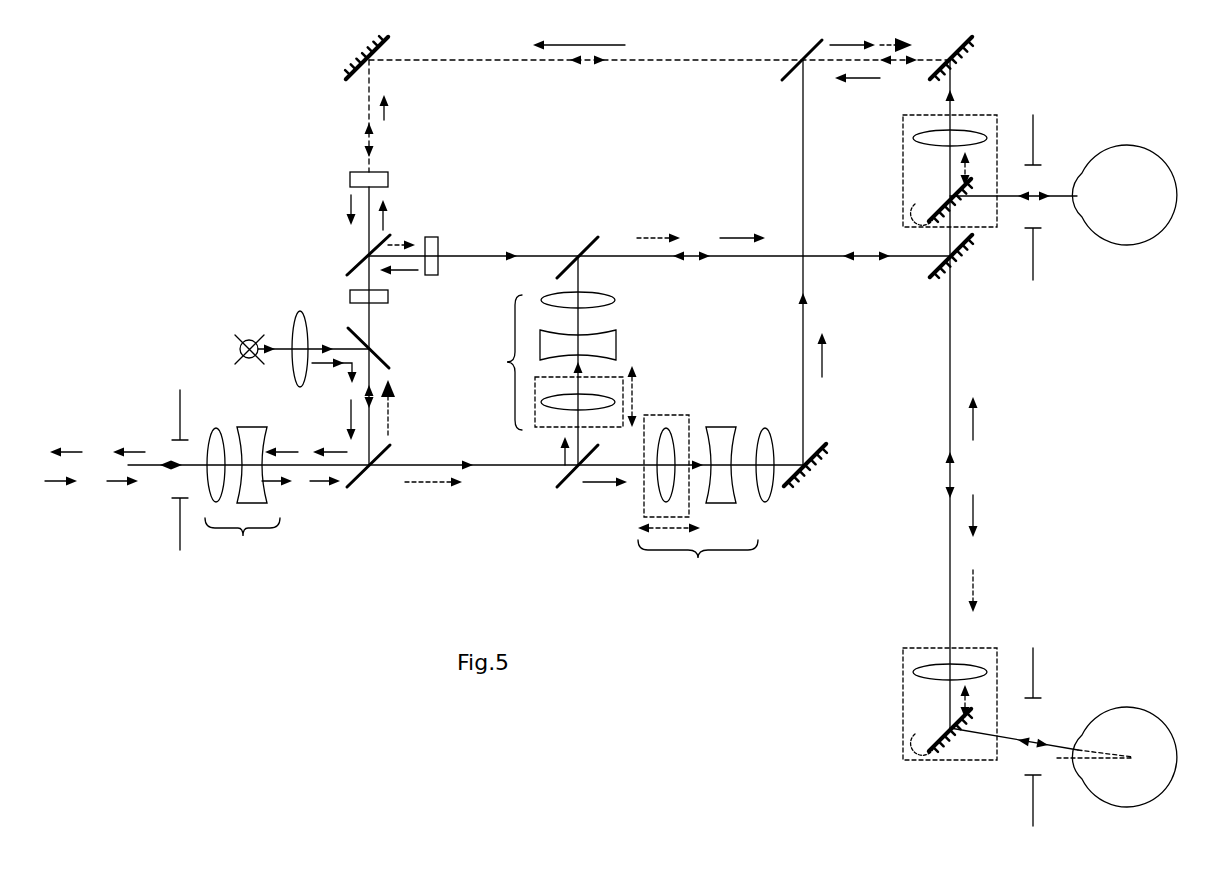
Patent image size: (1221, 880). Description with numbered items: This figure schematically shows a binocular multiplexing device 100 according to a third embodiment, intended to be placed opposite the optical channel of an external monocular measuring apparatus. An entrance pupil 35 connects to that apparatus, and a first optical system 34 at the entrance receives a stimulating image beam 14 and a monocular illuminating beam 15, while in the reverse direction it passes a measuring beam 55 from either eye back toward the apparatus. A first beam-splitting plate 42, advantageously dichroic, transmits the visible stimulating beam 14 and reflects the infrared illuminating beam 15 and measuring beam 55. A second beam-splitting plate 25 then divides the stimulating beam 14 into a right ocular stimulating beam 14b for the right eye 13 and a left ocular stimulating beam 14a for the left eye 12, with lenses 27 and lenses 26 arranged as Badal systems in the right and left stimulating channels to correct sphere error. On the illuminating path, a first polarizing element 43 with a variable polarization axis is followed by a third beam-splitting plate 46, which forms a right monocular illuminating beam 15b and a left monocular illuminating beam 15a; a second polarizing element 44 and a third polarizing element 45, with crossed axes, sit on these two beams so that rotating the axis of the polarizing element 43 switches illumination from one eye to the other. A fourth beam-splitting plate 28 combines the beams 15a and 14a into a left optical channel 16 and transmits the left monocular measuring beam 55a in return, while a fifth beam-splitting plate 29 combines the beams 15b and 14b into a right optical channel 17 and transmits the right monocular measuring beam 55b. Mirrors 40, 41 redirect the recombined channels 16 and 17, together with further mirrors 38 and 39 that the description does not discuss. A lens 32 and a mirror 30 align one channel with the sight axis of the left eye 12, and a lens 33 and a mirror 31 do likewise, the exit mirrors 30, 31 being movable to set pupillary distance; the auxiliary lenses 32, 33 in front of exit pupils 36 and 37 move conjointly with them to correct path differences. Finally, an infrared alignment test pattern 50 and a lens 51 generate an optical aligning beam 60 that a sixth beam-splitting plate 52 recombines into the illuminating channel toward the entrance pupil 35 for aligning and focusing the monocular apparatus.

The left eye 12 is at (1143, 706).
The right eye 13 is at (1128, 144).
The stimulating image beam 14 is at (52, 483).
The left ocular stimulating beam 14a is at (560, 446).
The right ocular stimulating beam 14b is at (610, 486).
The monocular illuminating beam 15 is at (120, 483).
The left monocular illuminating beam 15a is at (390, 222).
The right monocular illuminating beam 15b is at (392, 112).
The left optical channel 16 is at (735, 262).
The right optical channel 17 is at (898, 62).
The second beam-splitting plate 25 is at (568, 492).
The lenses 26 is at (507, 360).
The lenses 27 is at (698, 562).
The fourth beam-splitting plate 28 is at (580, 240).
The fifth beam-splitting plate 29 is at (780, 80).
The mirror 30 is at (968, 745).
The mirror 31 is at (975, 218).
The lens 32 is at (930, 665).
The lens 33 is at (970, 130).
The first optical system 34 is at (243, 540).
The entrance pupil 35 is at (180, 398).
The exit pupil 36 is at (1035, 678).
The exit pupil 37 is at (1035, 265).
The mirror 38 is at (345, 62).
The mirror 39 is at (820, 446).
The mirror 40 is at (965, 272).
The mirror 41 is at (975, 52).
The first beam-splitting plate 42 is at (373, 495).
The first polarizing element 43 is at (352, 290).
The second polarizing element 44 is at (440, 246).
The third polarizing element 45 is at (358, 170).
The third beam-splitting plate 46 is at (355, 264).
The infrared alignment test pattern 50 is at (245, 338).
The lens 51 is at (295, 322).
The sixth beam-splitting plate 52 is at (392, 345).
The measuring beam 55 is at (70, 452).
The left monocular measuring beam 55a is at (400, 270).
The right monocular measuring beam 55b is at (350, 205).
The optical aligning beam 60 is at (133, 452).
The binocular multiplexing device 100 is at (290, 103).